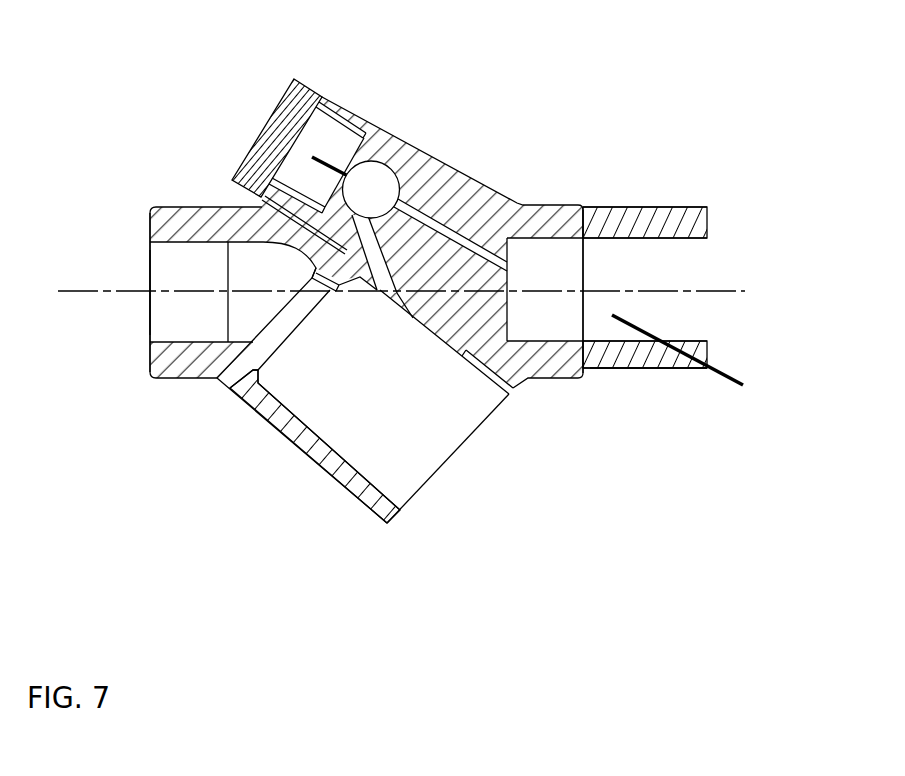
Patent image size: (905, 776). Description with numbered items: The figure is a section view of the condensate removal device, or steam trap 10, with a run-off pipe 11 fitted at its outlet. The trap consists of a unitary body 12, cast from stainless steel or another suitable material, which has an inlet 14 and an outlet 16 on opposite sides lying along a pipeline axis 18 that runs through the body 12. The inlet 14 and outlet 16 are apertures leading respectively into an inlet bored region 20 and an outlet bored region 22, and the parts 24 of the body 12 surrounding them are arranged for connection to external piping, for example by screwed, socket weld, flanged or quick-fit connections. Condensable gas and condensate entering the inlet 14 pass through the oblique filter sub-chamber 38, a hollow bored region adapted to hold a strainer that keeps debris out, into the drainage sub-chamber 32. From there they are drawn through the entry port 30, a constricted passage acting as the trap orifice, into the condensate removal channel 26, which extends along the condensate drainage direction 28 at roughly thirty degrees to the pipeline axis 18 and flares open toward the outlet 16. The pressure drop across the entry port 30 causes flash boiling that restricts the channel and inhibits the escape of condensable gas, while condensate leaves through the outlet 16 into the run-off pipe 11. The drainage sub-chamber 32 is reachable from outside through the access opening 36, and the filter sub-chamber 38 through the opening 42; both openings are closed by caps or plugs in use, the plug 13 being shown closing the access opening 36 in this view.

The condensate removal device 10 is at (289, 474).
The run-off pipe 11 is at (632, 369).
The unitary body 12 is at (551, 165).
The plug 13 is at (273, 123).
The inlet 14 is at (160, 262).
The outlet 16 is at (565, 268).
The pipeline axis 18 is at (700, 284).
The inlet bored region 20 is at (203, 333).
The outlet bored region 22 is at (551, 335).
The parts of the body surrounding the inlet and outlet 24 is at (551, 214).
The condensate removal channel 26 is at (430, 207).
The condensate drainage direction 28 is at (723, 368).
The entry port 30 is at (352, 168).
The drainage sub-chamber 32 is at (341, 140).
The access opening 36 is at (315, 122).
The filter sub-chamber 38 is at (361, 410).
The opening 42 is at (430, 453).